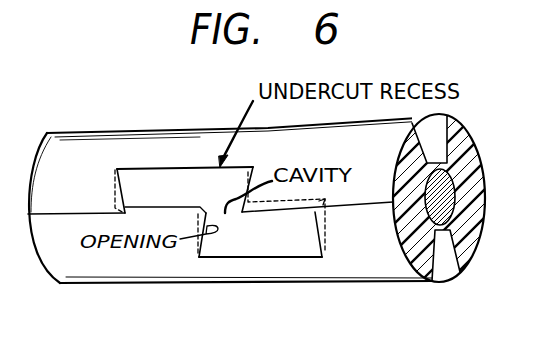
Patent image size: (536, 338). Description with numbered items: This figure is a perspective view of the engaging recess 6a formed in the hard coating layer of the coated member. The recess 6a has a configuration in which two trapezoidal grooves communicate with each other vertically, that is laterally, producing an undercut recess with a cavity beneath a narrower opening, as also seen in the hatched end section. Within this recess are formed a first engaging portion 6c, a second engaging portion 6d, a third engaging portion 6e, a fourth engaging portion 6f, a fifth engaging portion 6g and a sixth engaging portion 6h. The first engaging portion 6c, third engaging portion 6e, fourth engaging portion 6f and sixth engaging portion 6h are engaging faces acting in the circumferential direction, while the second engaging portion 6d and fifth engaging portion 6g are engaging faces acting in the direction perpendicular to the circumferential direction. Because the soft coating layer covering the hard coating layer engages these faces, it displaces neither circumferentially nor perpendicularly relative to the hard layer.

The engaging recess 6a is at (210, 167).
The first engaging portion 6c is at (118, 186).
The second engaging portion 6d is at (173, 207).
The third engaging portion 6e is at (200, 240).
The fourth engaging portion 6f is at (316, 238).
The fifth engaging portion 6g is at (273, 209).
The sixth engaging portion 6h is at (245, 188).